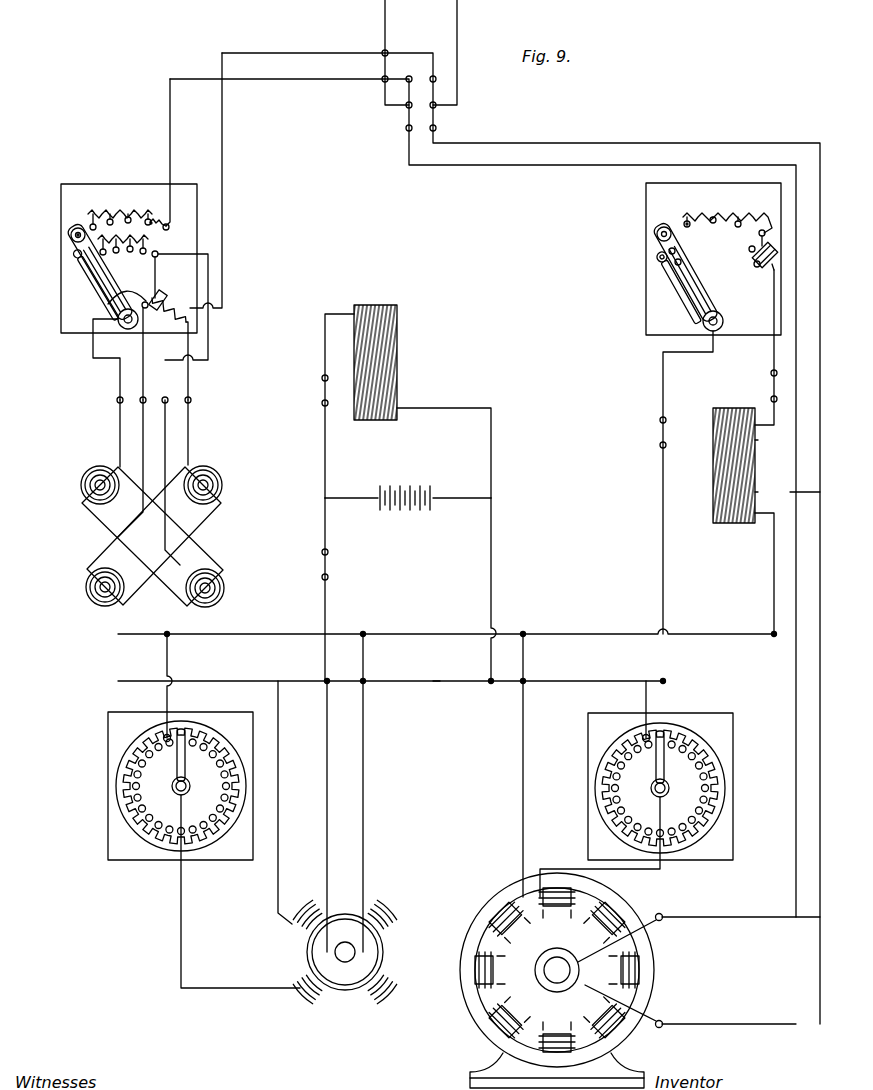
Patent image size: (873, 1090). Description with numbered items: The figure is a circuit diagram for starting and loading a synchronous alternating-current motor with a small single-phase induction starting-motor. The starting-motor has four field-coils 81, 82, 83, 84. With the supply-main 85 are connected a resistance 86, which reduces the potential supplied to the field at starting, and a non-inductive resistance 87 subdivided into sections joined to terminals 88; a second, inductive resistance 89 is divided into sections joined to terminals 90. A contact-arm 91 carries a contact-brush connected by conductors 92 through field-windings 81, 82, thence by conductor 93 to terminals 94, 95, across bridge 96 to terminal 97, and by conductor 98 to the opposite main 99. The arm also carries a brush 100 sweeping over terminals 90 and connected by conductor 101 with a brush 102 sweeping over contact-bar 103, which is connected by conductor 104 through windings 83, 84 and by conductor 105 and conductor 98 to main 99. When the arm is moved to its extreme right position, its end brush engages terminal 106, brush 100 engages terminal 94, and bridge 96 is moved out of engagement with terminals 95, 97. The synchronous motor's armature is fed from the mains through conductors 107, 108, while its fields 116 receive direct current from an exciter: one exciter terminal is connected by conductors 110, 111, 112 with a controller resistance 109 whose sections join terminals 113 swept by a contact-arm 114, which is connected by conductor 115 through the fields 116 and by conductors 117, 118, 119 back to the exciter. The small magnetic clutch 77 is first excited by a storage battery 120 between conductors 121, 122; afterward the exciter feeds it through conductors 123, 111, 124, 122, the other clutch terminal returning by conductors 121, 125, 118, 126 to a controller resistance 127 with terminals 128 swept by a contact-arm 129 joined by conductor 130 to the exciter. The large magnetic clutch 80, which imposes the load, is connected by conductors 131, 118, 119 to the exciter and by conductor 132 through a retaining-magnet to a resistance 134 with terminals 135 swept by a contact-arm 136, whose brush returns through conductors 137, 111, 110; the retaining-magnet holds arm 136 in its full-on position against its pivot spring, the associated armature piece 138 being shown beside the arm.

The supply-main 85 is at (384, 18).
The opposite main 99 is at (458, 20).
The conductor 98 is at (222, 252).
The resistance 87 is at (130, 206).
The terminals 88 is at (91, 225).
The resistance 86 is at (164, 222).
The terminal 106 is at (170, 227).
The terminals 90 is at (146, 250).
The terminal 94 is at (158, 257).
The conductors 92 is at (78, 274).
The brush 100 is at (94, 284).
The contact-arm 91 is at (71, 237).
The second resistance 89 is at (73, 230).
The conductor 101 is at (117, 320).
The brush 102 is at (103, 328).
The contact-bar 103 is at (111, 298).
The terminal 95 is at (146, 302).
The terminal 97 is at (170, 296).
The bridge 96 is at (178, 316).
The conductor 105 is at (191, 377).
The conductor 104 is at (143, 425).
The conductor 93 is at (166, 433).
The field-coil 81 is at (100, 470).
The field-coil 84 is at (212, 478).
The field-coil 83 is at (100, 600).
The field-coil 82 is at (216, 598).
The magnetic clutch 77 is at (392, 306).
The conductor 121 is at (325, 438).
The conductor 125 is at (325, 540).
The conductor 122 is at (491, 441).
The conductor 124 is at (491, 557).
The storage battery 120 is at (408, 485).
The conductor 118 is at (392, 633).
The conductor 126 is at (166, 663).
The resistance 127 is at (213, 735).
The terminals 128 is at (232, 762).
The contact-arm 129 is at (190, 787).
The conductor 130 is at (181, 905).
The conductor 123 is at (279, 719).
The conductor 110 is at (327, 813).
The conductor 119 is at (364, 749).
The conductor 111 is at (433, 682).
The resistance 134 is at (750, 206).
The terminals 135 is at (684, 222).
The contact-arm 136 is at (688, 283).
The conductor 137 is at (686, 299).
The armature 138 is at (779, 258).
The conductor 132 is at (771, 373).
The magnetic clutch 80 is at (730, 402).
The conductor 107 is at (756, 446).
The conductor 108 is at (787, 491).
The conductor 131 is at (774, 590).
The conductor 112 is at (646, 699).
The resistance 109 is at (706, 738).
The terminals 113 is at (712, 795).
The contact-arm 114 is at (664, 760).
The conductor 115 is at (663, 872).
The conductor 117 is at (523, 794).
The fields 116 is at (588, 926).